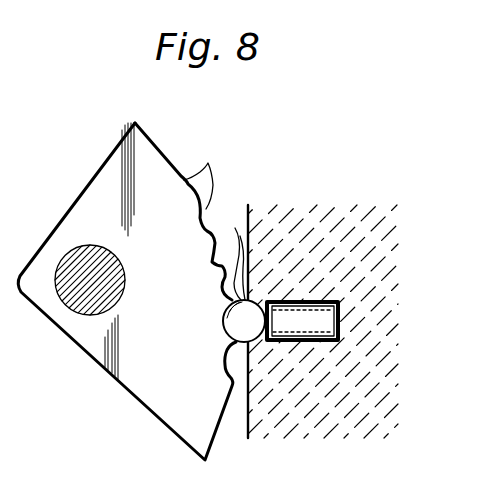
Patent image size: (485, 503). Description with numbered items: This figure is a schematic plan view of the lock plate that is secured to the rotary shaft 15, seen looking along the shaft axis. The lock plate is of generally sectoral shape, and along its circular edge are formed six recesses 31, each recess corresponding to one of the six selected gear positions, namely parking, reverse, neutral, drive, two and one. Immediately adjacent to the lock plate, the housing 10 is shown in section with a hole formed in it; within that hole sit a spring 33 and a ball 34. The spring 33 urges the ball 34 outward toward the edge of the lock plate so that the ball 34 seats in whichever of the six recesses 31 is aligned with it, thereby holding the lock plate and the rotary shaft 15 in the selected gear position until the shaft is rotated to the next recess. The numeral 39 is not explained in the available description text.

The housing 10 is at (352, 213).
The rotary shaft 15 is at (80, 313).
The recesses 31 is at (127, 291).
The spring 33 is at (313, 298).
The ball 34 is at (242, 271).
The detent spring 39 is at (288, 347).